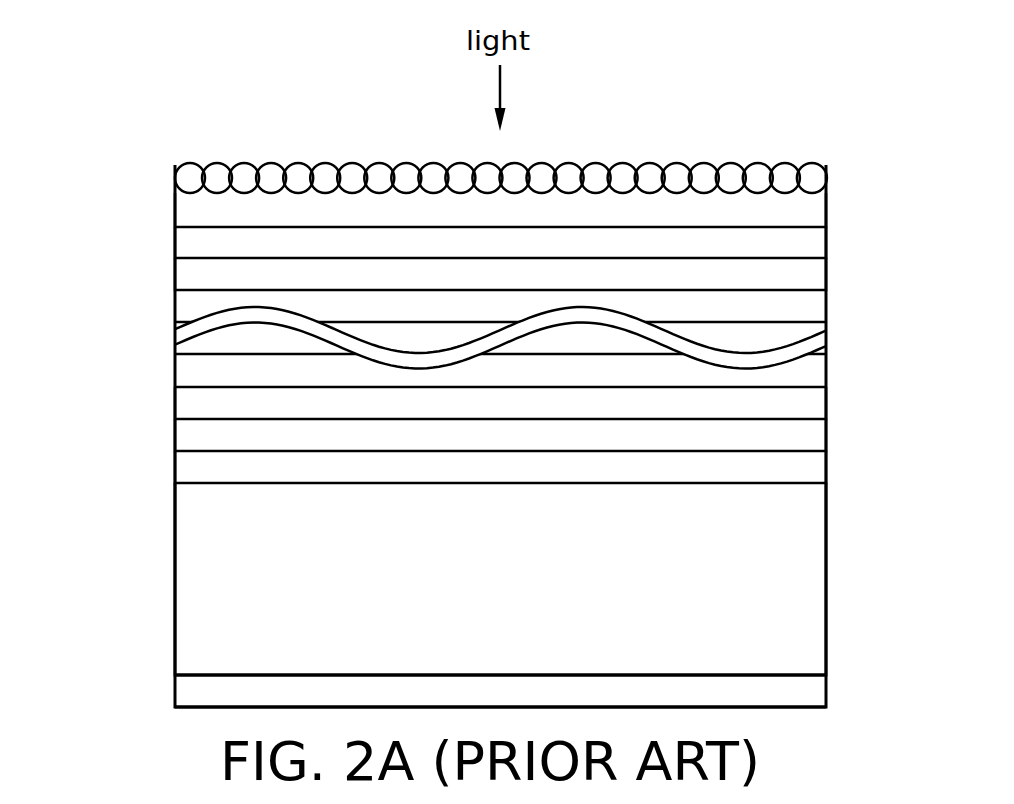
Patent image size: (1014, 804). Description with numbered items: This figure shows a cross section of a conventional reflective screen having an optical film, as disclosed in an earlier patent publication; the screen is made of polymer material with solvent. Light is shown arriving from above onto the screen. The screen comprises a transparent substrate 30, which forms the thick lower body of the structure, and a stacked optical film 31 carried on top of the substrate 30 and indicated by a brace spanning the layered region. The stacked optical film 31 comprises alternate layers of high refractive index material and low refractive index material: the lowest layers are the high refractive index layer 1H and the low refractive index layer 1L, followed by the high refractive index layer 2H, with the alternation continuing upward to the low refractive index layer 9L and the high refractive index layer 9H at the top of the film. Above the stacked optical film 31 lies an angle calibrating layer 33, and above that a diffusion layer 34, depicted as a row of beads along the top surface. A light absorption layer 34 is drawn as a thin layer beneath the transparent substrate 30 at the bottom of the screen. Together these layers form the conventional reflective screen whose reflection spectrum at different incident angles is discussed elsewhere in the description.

The light absorption layer / diffusion layer 34 is at (813, 177).
The angle calibrating layer 33 is at (813, 210).
The high refractive index material layer 9H is at (813, 242).
The low refractive index material layer 9L is at (813, 274).
The high refractive index material layer 2H is at (813, 402).
The low refractive index material layer 1L is at (813, 434).
The high refractive index material layer 1H is at (813, 466).
The transparent substrate 30 is at (813, 578).
The stacked optical film 31 is at (947, 170).